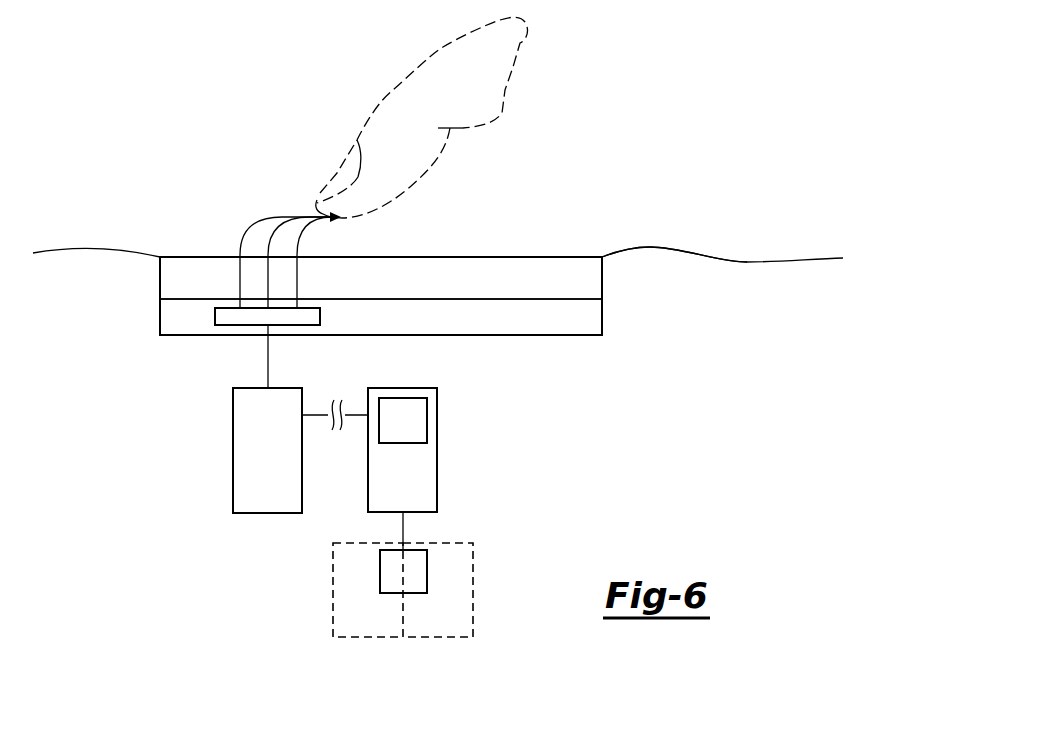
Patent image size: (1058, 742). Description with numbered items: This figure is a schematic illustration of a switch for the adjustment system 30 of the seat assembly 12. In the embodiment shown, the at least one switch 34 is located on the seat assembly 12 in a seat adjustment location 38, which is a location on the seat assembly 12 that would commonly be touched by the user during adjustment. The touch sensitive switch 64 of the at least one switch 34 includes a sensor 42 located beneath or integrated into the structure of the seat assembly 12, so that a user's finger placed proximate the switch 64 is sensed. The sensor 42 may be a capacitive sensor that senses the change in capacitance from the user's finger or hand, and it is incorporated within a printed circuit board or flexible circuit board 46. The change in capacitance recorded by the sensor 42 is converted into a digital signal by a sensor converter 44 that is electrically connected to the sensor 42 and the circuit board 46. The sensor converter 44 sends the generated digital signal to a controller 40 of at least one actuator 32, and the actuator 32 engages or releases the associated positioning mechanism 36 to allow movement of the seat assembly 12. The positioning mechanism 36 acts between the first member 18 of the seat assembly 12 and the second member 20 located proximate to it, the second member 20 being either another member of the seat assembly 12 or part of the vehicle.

The seat assembly 12 is at (155, 200).
The adjustment system 30 is at (746, 200).
The seat adjustment location 38 is at (653, 248).
The touch sensitive switch 64 is at (446, 278).
The flexible circuit board 46 is at (602, 318).
The sensor 42 is at (300, 317).
The switch 34 is at (146, 399).
The sensor converter 44 is at (233, 450).
The actuator 32 is at (393, 485).
The controller 40 is at (393, 431).
The positioning mechanism 36 is at (393, 584).
The first member 18 is at (348, 608).
The second member 20 is at (438, 608).